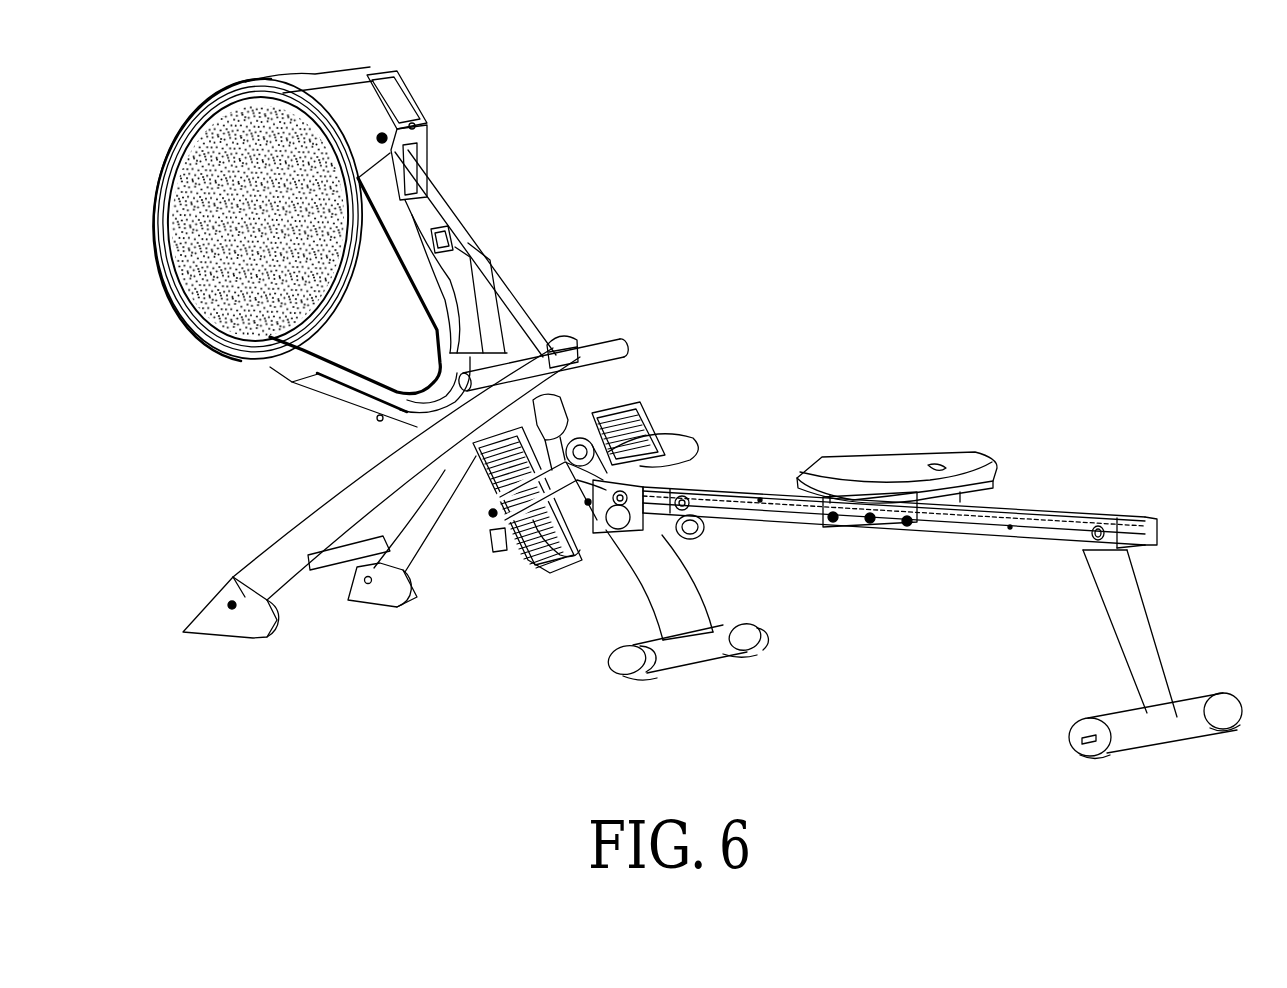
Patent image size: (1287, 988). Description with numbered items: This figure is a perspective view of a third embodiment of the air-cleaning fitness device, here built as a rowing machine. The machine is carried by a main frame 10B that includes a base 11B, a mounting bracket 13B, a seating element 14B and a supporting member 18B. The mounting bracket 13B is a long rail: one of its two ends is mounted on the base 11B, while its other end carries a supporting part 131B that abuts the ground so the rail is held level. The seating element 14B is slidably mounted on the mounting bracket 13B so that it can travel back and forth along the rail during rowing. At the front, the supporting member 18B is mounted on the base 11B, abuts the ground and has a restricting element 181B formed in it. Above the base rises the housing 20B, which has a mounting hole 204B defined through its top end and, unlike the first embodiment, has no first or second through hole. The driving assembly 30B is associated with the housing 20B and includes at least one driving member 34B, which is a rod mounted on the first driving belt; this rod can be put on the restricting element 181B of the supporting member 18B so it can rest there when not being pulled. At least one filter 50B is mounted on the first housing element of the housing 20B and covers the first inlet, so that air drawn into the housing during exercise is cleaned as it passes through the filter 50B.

The main frame 10B is at (785, 515).
The base 11B is at (468, 463).
The mounting bracket 13B is at (1070, 520).
The supporting part 131B is at (1142, 635).
The seating element 14B is at (980, 457).
The supporting member 18B is at (303, 527).
The restricting element 181B is at (557, 350).
The housing 20B is at (279, 90).
The mounting hole 204B is at (443, 233).
The driving assembly 30B is at (498, 297).
The driving member 34B is at (620, 353).
The filter 50B is at (186, 166).